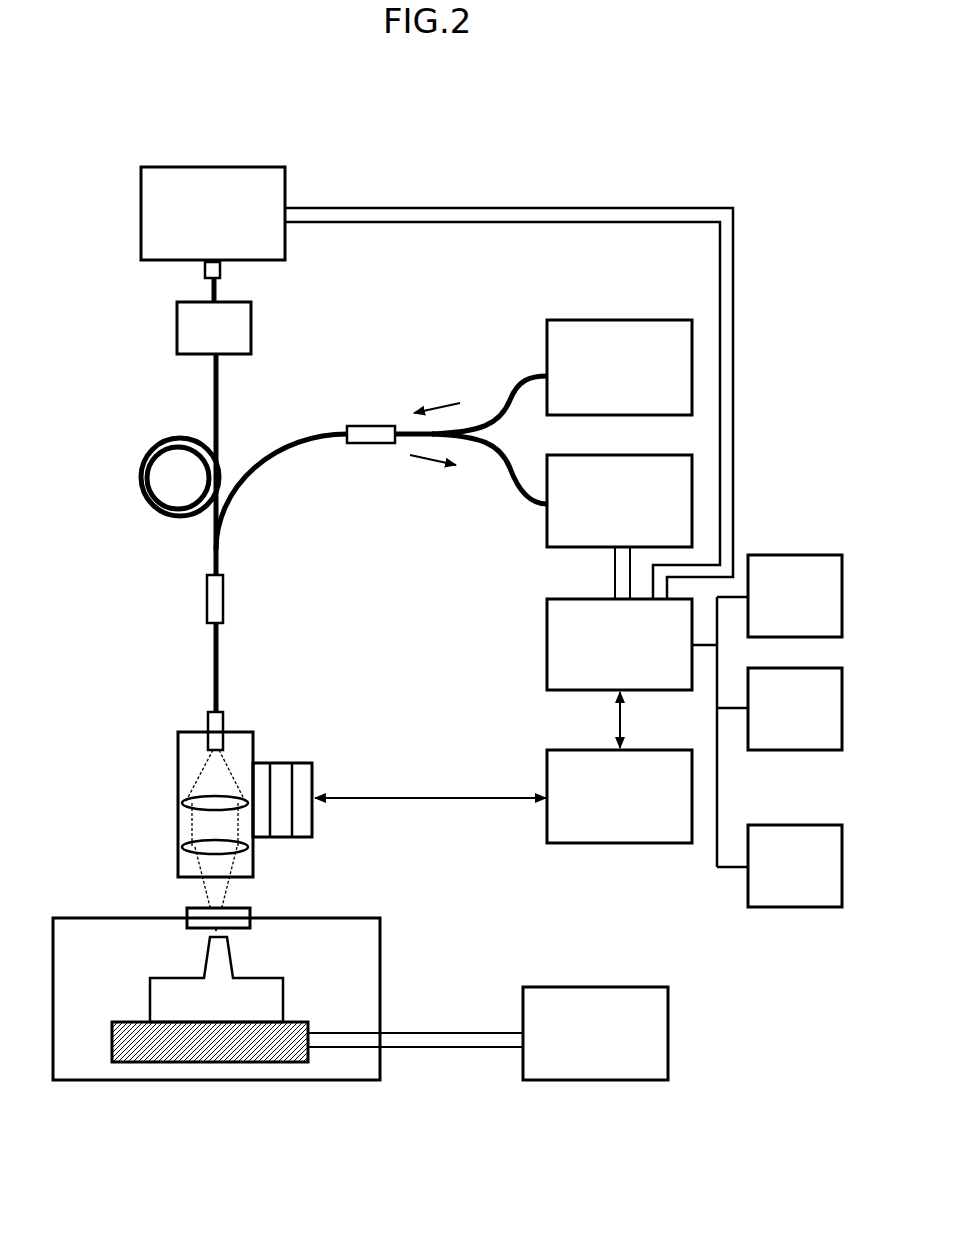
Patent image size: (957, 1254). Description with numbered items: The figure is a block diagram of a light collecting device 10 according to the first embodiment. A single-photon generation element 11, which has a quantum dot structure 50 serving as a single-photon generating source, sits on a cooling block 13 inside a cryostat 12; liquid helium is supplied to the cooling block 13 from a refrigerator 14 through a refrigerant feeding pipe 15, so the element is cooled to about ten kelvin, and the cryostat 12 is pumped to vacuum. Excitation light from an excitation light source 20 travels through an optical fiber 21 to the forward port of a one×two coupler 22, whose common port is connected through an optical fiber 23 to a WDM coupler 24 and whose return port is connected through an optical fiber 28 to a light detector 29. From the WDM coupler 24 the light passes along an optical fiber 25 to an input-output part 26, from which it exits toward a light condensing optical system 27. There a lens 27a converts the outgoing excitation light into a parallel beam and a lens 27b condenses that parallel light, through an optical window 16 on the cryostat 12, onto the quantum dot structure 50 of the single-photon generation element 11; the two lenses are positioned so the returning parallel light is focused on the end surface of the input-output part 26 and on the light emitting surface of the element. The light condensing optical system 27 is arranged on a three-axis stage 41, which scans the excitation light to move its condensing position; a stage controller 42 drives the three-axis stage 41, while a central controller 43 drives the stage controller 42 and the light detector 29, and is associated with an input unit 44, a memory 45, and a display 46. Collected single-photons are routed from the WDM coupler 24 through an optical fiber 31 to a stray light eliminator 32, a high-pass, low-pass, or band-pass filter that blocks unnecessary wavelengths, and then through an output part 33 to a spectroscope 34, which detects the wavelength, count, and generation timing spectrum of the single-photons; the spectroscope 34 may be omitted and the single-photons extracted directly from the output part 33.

The light collecting device 10 is at (109, 131).
The single-photon generation element 11 is at (138, 993).
The cryostat 12 is at (380, 953).
The cooling block 13 is at (218, 1062).
The refrigerator 14 is at (612, 987).
The refrigerant feeding pipe 15 is at (440, 1048).
The optical window 16 is at (186, 907).
The excitation light source 20 is at (612, 320).
The optical fiber 21 is at (507, 387).
The one×two coupler 22 is at (368, 445).
The optical fiber 23 is at (297, 440).
The WDM coupler 24 is at (223, 598).
The optical fiber 25 is at (214, 668).
The input-output part 26 is at (224, 718).
The light condensing optical system 27 is at (157, 831).
The lens 27a is at (178, 800).
The lens 27b is at (177, 838).
The optical fiber 28 is at (510, 498).
The light detector 29 is at (625, 455).
The optical fiber 31 is at (142, 478).
The stray light eliminator 32 is at (177, 326).
The output part 33 is at (222, 270).
The spectroscope 34 is at (141, 215).
The three-axis stage 41 is at (253, 843).
The stage controller 42 is at (632, 843).
The central controller 43 is at (547, 643).
The input unit 44 is at (794, 555).
The memory 45 is at (794, 750).
The display 46 is at (794, 907).
The quantum dot structure 50 is at (190, 948).